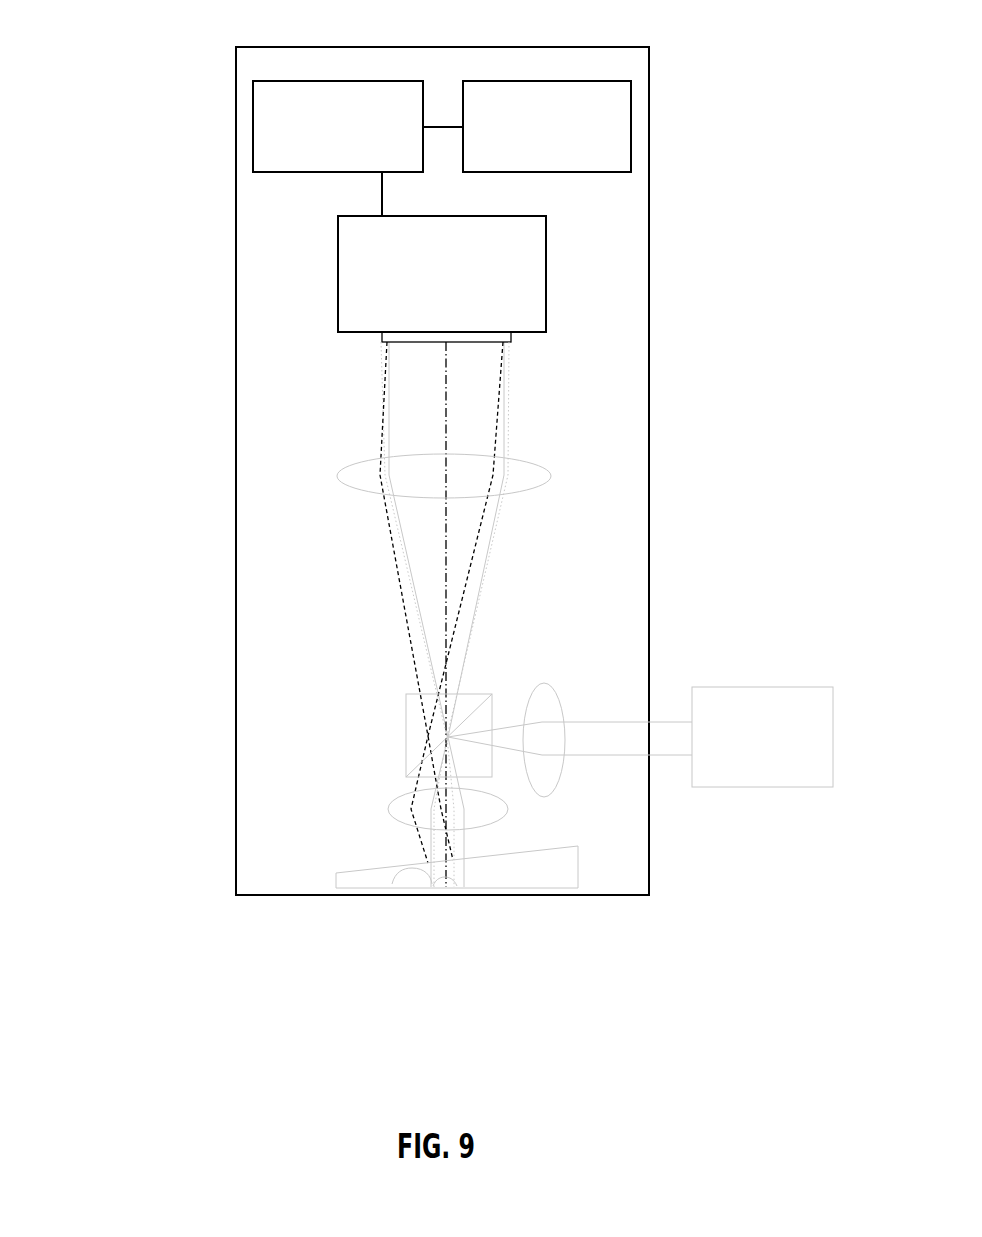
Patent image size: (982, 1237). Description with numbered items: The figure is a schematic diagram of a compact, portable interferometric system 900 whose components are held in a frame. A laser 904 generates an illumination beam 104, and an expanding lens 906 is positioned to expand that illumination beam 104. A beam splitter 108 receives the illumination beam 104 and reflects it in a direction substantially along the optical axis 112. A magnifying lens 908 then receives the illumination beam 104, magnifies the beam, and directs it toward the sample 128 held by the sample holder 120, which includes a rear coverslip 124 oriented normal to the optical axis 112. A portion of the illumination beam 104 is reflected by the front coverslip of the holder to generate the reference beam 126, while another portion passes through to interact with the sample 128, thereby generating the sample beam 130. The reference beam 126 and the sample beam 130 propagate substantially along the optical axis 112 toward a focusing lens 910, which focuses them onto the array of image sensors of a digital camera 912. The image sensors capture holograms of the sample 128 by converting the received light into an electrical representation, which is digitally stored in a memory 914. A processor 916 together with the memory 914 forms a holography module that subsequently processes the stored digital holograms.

The interferometric system 900 is at (150, 68).
The processor 916 is at (322, 154).
The memory 914 is at (530, 154).
The digital camera 912 is at (417, 307).
The optical axis 112 is at (446, 374).
The sample beam 130 is at (509, 400).
The lens L2 910 is at (527, 489).
The reference beam 126 is at (457, 618).
The illumination beam 104 is at (509, 727).
The lens L0 906 is at (544, 683).
The beam splitter 108 is at (406, 735).
The laser 904 is at (735, 775).
The sample holder 120 is at (558, 846).
The rear coverslip 124 is at (563, 886).
The sample 128 is at (392, 884).
The lens L1 908 is at (402, 823).